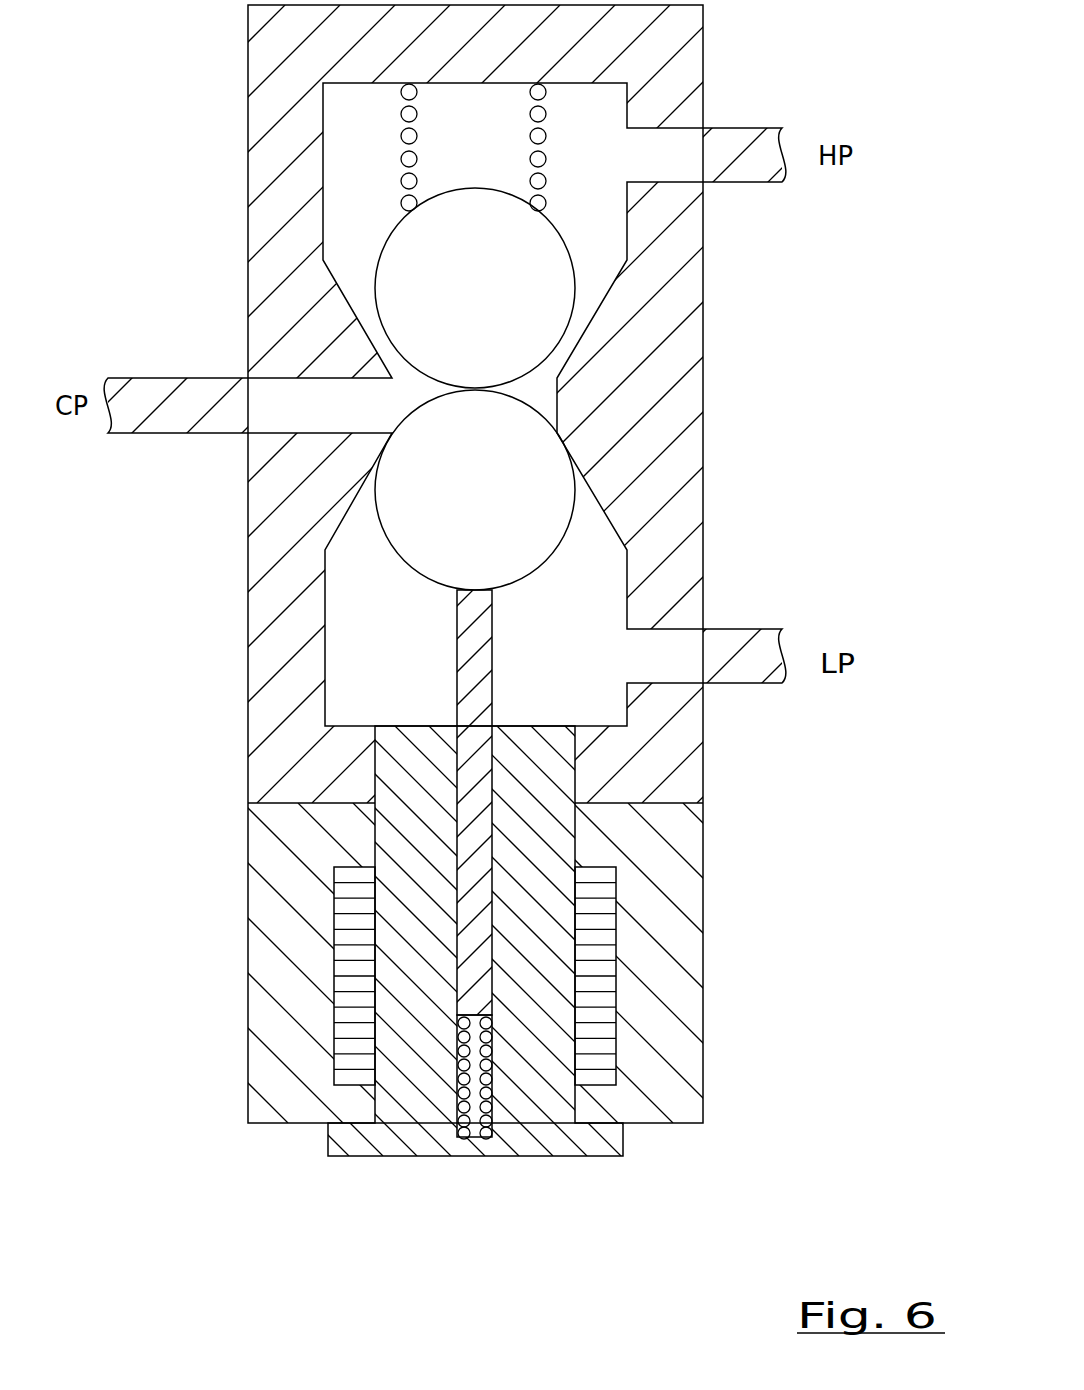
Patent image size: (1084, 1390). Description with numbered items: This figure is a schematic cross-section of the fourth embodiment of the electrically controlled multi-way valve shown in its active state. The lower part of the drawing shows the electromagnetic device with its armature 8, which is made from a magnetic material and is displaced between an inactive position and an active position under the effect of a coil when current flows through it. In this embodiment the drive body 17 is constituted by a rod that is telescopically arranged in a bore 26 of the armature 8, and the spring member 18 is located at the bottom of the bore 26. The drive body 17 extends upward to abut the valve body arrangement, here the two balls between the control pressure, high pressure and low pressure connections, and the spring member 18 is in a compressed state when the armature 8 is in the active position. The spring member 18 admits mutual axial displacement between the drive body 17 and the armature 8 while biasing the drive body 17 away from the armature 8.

The armature 8 is at (397, 1158).
The drive body 17 is at (473, 645).
The spring member 18 is at (487, 1103).
The bore 26 is at (458, 880).